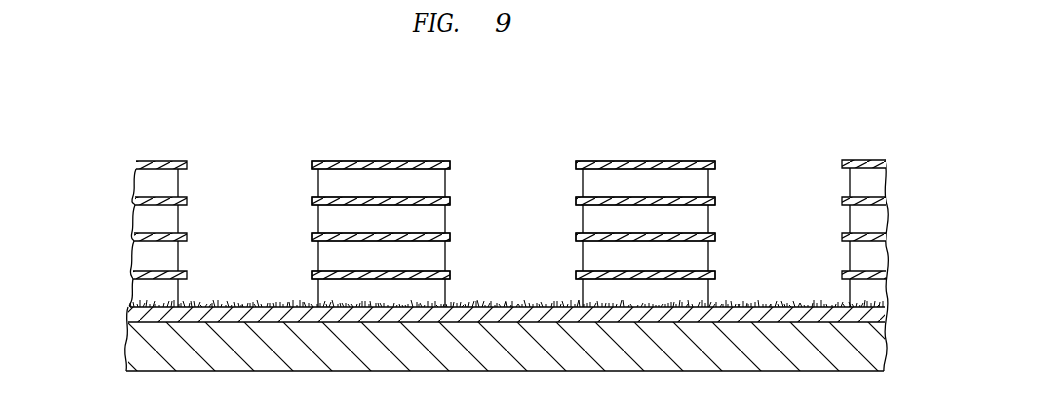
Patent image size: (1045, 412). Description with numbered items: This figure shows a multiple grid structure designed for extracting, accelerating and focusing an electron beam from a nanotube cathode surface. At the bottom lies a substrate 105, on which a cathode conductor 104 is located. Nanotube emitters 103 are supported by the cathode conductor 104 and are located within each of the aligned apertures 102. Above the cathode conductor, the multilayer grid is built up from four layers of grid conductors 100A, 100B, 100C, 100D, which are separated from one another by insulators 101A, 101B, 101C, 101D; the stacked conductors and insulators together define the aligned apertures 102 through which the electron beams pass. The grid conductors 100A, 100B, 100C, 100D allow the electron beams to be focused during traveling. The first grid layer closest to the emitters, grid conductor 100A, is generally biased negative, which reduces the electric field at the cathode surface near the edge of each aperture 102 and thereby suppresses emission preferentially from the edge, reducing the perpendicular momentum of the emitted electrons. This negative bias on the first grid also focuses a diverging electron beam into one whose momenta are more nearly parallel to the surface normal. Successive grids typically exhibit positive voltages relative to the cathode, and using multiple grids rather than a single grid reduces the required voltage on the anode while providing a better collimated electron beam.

The grid conductor 100A is at (185, 272).
The grid conductor 100B is at (185, 235).
The grid conductor 100C is at (185, 199).
The grid conductor 100D is at (185, 163).
The insulator 101A is at (130, 299).
The insulator 101B is at (132, 265).
The insulator 101C is at (134, 228).
The insulator 101D is at (136, 188).
The aligned apertures 102 is at (315, 127).
The nanotube emitters 103 is at (228, 302).
The cathode conductor 104 is at (885, 312).
The substrate 105 is at (287, 372).